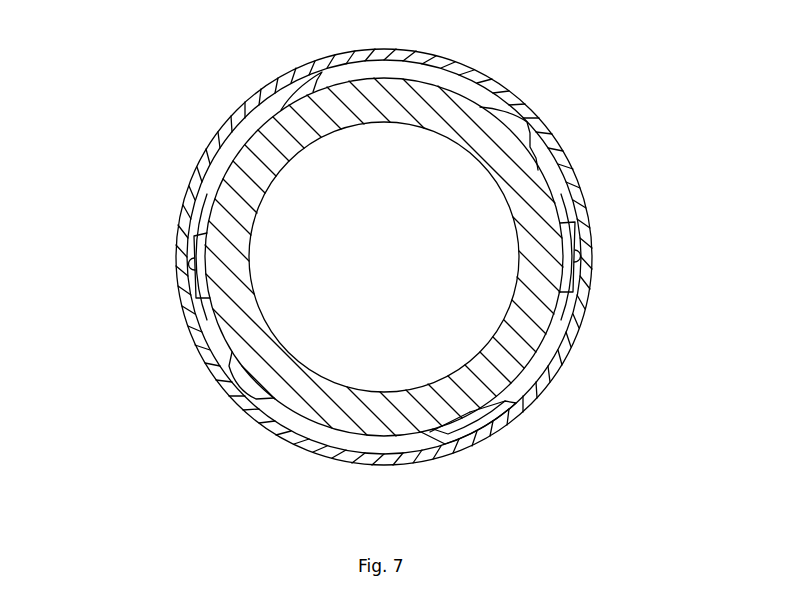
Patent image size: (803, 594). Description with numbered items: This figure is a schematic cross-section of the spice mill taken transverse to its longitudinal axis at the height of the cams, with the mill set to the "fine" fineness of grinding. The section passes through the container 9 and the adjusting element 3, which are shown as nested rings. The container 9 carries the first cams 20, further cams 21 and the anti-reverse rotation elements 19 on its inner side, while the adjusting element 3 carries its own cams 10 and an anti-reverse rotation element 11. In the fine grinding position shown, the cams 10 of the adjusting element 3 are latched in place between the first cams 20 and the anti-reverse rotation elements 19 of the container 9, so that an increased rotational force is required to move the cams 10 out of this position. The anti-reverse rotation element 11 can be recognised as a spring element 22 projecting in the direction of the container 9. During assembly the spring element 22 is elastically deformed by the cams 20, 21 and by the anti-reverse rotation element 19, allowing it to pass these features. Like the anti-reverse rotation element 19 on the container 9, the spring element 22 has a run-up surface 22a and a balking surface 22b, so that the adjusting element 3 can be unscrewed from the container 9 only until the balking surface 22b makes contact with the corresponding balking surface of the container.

The adjusting element 3 is at (230, 125).
The container 9 is at (212, 352).
The cams 10 is at (190, 258).
The anti-reverse rotation element 11 is at (505, 418).
The anti-reverse rotation element 19 is at (195, 215).
The first cams 20 is at (190, 283).
The cams 21 is at (540, 128).
The spring element 22 is at (472, 435).
The run-up surface 22a is at (458, 425).
The balking surface 22b is at (490, 412).